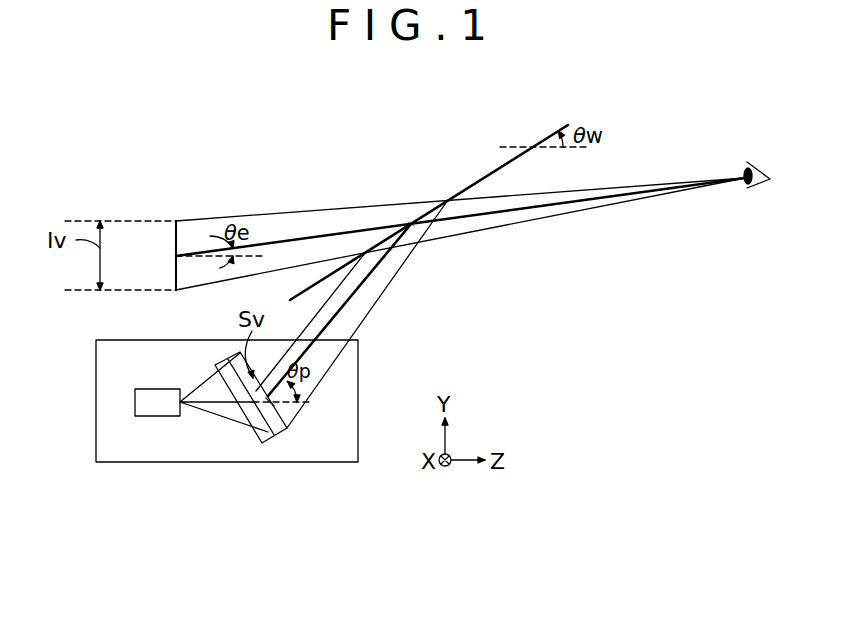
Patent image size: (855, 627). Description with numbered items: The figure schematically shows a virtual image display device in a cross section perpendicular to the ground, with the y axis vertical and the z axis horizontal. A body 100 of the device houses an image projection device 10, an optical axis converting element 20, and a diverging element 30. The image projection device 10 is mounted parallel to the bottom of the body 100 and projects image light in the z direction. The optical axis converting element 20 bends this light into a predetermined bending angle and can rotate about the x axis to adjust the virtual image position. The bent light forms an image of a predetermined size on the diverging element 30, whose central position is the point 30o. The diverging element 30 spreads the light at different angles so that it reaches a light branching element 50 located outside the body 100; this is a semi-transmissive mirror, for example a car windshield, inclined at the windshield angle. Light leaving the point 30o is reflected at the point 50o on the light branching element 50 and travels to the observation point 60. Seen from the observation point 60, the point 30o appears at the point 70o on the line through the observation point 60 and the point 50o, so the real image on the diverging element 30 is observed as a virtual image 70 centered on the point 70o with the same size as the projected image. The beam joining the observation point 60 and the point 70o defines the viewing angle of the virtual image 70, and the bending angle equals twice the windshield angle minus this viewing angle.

The image projection device 10 is at (157, 408).
The optical axis converting element 20 is at (267, 438).
The diverging element 30 is at (287, 431).
The point 30o is at (274, 405).
The light branching element 50 is at (507, 162).
The point 50o is at (420, 230).
The observation point 60 is at (752, 188).
The virtual image 70 is at (176, 222).
The point 70o is at (176, 256).
The body 100 is at (118, 372).